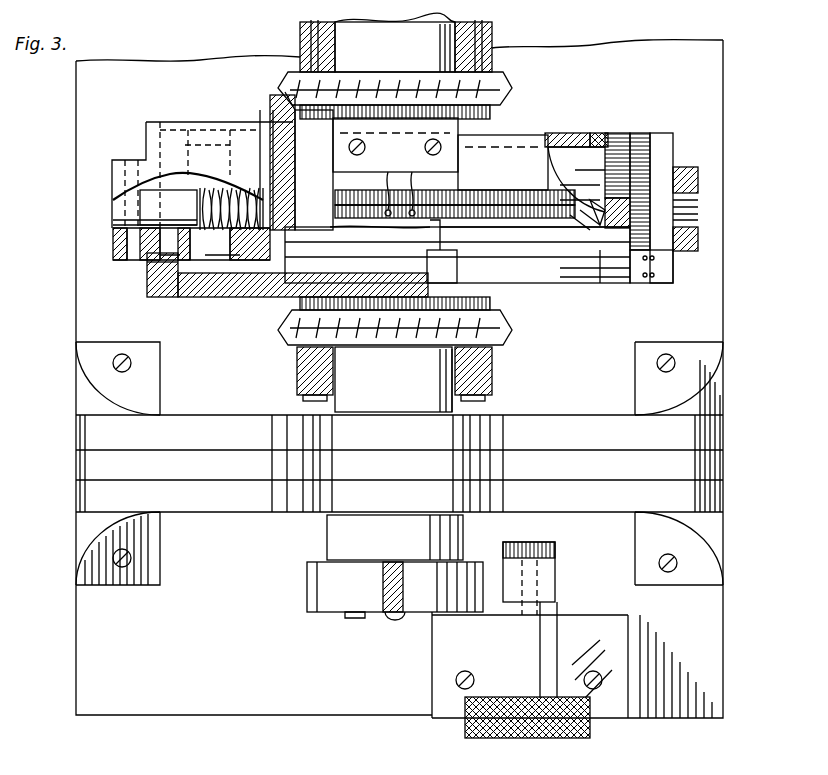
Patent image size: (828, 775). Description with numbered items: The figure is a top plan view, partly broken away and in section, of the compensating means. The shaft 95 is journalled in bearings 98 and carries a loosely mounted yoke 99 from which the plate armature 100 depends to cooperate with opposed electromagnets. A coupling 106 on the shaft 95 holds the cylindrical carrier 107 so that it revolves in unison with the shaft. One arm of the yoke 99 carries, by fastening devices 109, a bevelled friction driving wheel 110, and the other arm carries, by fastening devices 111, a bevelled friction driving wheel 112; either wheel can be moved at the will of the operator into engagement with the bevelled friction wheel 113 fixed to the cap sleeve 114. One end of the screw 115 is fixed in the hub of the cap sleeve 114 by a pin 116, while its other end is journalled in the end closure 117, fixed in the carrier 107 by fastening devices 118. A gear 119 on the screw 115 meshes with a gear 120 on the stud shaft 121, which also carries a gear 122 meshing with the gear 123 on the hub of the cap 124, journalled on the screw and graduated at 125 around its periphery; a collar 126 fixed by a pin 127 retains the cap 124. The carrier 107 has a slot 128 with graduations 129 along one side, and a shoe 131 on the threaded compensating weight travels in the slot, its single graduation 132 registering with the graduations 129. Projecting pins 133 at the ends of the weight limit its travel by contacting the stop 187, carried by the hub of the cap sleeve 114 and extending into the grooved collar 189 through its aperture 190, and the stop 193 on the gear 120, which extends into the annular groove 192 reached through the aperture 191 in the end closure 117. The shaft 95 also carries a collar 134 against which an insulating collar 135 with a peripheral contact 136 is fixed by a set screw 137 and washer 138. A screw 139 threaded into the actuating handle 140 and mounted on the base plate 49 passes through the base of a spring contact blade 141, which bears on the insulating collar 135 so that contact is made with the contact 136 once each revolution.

The base plate 49 is at (399, 379).
The shaft 95 is at (395, 42).
The bearings 98 is at (399, 463).
The yoke 99 is at (238, 42).
The plate armature 100 is at (440, 293).
The coupling 106 is at (500, 286).
The carrier 107 is at (566, 280).
The fastening devices 109 is at (500, 70).
The bevelled friction driving wheel 110 is at (508, 100).
The fastening devices 111 is at (490, 405).
The bevelled friction driving wheel 112 is at (505, 332).
The bevelled friction wheel 113 is at (292, 112).
The cap sleeve 114 is at (256, 297).
The screw 115 is at (202, 170).
The pin 116 is at (138, 262).
The end closure 117 is at (592, 133).
The fastening devices 118 is at (622, 135).
The gear 119 is at (605, 218).
The gear 120 is at (652, 138).
The stud shaft 121 is at (556, 180).
The gear 122 is at (670, 150).
The gear 123 is at (670, 262).
The cap 124 is at (665, 285).
The graduations 125 is at (652, 285).
The collar 126 is at (700, 172).
The pin 127 is at (700, 228).
The slot 128 is at (522, 218).
The graduations 129 is at (515, 190).
The shoe 131 is at (428, 177).
The single graduation 132 is at (395, 167).
The projecting pins 133 is at (470, 216).
The collar 134 is at (327, 548).
The insulating collar 135 is at (310, 595).
The contact 136 is at (371, 587).
The set screw 137 is at (395, 614).
The washer 138 is at (345, 612).
The screw 139 is at (520, 648).
The actuating handle 140 is at (562, 738).
The spring contact blade 141 is at (520, 582).
The stop 187 is at (152, 290).
The grooved collar 189 is at (110, 245).
The aperture 190 is at (215, 273).
The aperture 191 is at (590, 217).
The annular groove 192 is at (542, 160).
The stop 193 is at (637, 135).